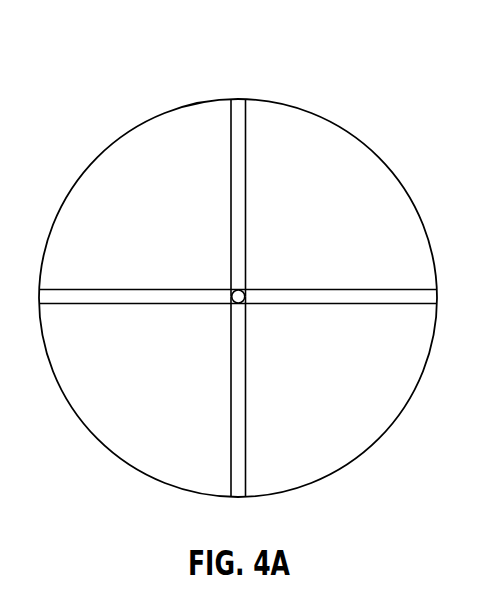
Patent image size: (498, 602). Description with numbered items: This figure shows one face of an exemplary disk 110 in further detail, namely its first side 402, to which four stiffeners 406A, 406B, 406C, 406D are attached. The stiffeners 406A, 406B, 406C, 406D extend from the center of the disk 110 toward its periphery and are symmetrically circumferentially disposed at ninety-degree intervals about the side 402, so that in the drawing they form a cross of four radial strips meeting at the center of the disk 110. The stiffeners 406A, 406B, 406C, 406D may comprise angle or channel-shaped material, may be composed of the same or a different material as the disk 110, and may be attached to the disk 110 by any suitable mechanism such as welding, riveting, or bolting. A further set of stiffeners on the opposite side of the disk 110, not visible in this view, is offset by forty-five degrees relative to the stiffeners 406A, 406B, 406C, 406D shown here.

The disk 110 is at (116, 52).
The side 402 is at (105, 150).
The stiffener 406A is at (246, 197).
The stiffener 406B is at (318, 304).
The stiffener 406C is at (231, 380).
The stiffener 406D is at (155, 290).